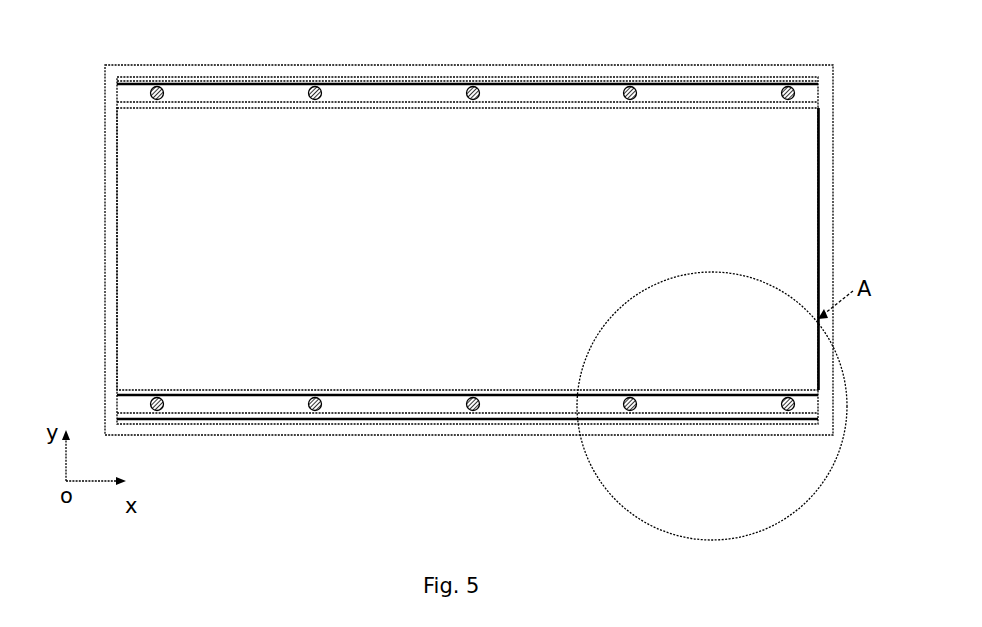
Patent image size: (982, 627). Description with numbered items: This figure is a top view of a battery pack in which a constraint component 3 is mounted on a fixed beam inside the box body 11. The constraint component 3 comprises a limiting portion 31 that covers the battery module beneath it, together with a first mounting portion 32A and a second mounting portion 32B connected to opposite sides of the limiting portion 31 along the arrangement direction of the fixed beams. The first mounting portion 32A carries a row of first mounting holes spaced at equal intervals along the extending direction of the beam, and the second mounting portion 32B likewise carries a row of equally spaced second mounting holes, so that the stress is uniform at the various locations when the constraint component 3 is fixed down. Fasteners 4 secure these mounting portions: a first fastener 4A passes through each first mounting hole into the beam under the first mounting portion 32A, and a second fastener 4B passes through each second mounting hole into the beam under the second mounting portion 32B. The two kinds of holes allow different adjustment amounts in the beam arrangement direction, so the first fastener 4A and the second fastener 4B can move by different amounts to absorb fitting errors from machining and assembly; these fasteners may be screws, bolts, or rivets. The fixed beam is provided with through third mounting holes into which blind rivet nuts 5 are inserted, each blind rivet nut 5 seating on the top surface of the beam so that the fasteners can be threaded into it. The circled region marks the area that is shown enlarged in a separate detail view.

The constraint component 3 is at (117, 198).
The box body 11 is at (245, 68).
The limiting portion 31 is at (146, 337).
The first mounting portion 32A is at (378, 100).
The second mounting portion 32B is at (372, 404).
The fastener 4 is at (318, 88).
The first fastener 4A is at (160, 88).
The second fastener 4B is at (160, 410).
The blind rivet nut 5 is at (633, 410).